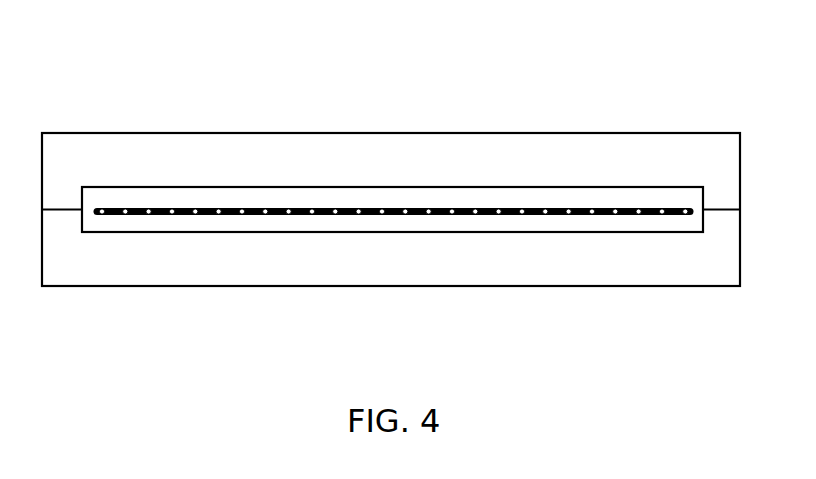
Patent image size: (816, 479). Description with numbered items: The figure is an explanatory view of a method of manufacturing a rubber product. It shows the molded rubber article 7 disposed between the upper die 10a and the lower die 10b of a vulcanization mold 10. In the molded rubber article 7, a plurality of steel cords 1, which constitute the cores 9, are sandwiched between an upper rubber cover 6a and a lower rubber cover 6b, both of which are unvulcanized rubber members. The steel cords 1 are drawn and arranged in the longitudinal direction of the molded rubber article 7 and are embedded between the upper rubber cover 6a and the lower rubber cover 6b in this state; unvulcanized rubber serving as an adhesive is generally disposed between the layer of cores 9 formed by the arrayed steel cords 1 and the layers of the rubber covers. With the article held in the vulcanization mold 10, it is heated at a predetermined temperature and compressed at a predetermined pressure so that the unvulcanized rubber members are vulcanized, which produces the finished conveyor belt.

The vulcanization mold 10 is at (487, 133).
The upper die 10a is at (123, 155).
The lower die 10b is at (117, 265).
The molded rubber article 7 is at (603, 184).
The upper rubber cover 6a is at (300, 195).
The lower rubber cover 6b is at (335, 222).
The steel cord 1 is at (393, 276).
The core 9 is at (174, 216).